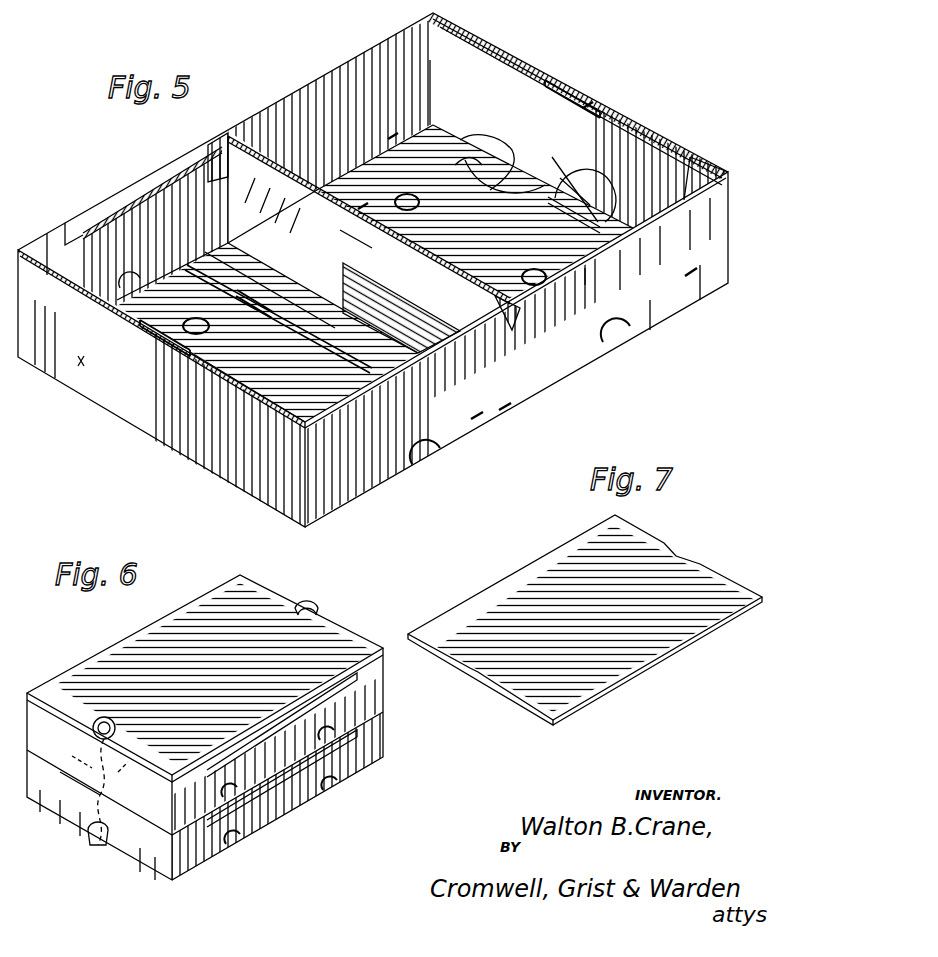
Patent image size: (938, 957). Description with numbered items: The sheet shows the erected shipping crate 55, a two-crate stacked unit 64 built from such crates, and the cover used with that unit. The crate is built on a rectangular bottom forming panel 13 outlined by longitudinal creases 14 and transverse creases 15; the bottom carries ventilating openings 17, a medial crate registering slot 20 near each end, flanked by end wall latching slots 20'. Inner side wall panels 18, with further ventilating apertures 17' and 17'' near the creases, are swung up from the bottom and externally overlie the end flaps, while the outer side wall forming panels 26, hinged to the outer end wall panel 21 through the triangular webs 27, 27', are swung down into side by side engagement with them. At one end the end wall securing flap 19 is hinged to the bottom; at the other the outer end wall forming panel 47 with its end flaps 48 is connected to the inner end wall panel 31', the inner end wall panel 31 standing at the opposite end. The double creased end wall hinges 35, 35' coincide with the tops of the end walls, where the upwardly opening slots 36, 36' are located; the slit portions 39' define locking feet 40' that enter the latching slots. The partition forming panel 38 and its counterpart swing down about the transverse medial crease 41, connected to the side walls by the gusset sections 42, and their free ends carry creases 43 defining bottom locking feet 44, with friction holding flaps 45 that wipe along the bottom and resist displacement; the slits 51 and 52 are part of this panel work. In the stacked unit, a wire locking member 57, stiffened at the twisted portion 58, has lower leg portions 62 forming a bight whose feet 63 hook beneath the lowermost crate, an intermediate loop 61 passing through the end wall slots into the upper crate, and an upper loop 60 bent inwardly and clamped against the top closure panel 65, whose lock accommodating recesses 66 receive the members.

In FIG. 5, the bottom forming panel 13 is at (585, 280).
In FIG. 6, the bottom forming panel 13 is at (328, 736).
In FIG. 5, the longitudinal creases 14 is at (172, 268).
In FIG. 5, the transverse creases 15 is at (600, 238).
In FIG. 5, the ventilating openings 17 is at (440, 218).
In FIG. 5, the ventilating apertures 17' is at (423, 469).
In FIG. 5, the arched opening 17'' is at (544, 377).
In FIG. 5, the inner side wall panels 18 is at (313, 120).
In FIG. 5, the end wall securing flap 19 is at (600, 190).
In FIG. 5, the crate registering slot 20 is at (554, 218).
In FIG. 6, the crate registering slot 20 is at (74, 870).
In FIG. 5, the end wall latching slots 20' is at (471, 212).
In FIG. 5, the outer end wall panel 21 is at (155, 440).
In FIG. 6, the outer end wall panel 21 is at (60, 772).
In FIG. 5, the outer side wall forming panels 26 is at (263, 133).
In FIG. 6, the outer side wall forming panels 26 is at (372, 680).
In FIG. 5, the triangular webs 27 is at (154, 314).
In FIG. 5, the corner flap 27' is at (717, 164).
In FIG. 5, the inner end wall panel 31 is at (168, 355).
In FIG. 6, the inner end wall panel 31 is at (61, 832).
In FIG. 5, the left hand inner end wall panel 31' is at (675, 120).
In FIG. 5, the double creased end wall hinge 35 is at (239, 387).
In FIG. 5, the double creased end wall hinge 35' is at (649, 103).
In FIG. 5, the transversely elongated slot 36 is at (142, 339).
In FIG. 6, the transversely elongated slot 36 is at (84, 702).
In FIG. 5, the transversely elongated slot 36' is at (590, 85).
In FIG. 5, the partition forming panel 38 is at (355, 235).
In FIG. 5, the inverted U-shaped slit portions 39' is at (481, 175).
In FIG. 5, the locking feet 40' is at (493, 153).
In FIG. 5, the transverse medial crease 41 is at (318, 203).
In FIG. 5, the gusset sections 42 is at (206, 145).
In FIG. 5, the transversely extending creases 43 is at (335, 303).
In FIG. 5, the bottom locking feet 44 is at (297, 275).
In FIG. 5, the friction holding flaps 45 is at (312, 323).
In FIG. 5, the outer end wall forming panel 47 is at (577, 168).
In FIG. 5, the end flaps 48 is at (425, 167).
In FIG. 5, the slit 51 is at (560, 172).
In FIG. 5, the slot 52 is at (393, 138).
In FIG. 5, the shipping crate 55 is at (557, 56).
In FIG. 6, the shipping crate 55 is at (403, 703).
In FIG. 6, the locking member 57 is at (285, 612).
In FIG. 6, the twisted or welded portion 58 is at (70, 760).
In FIG. 6, the upper crate aligning and stabilizing loop 60 is at (118, 724).
In FIG. 6, the intermediate crate aligning and stabilizing loop 61 is at (148, 745).
In FIG. 6, the lower leg portions 62 is at (92, 838).
In FIG. 6, the feet 63 is at (130, 858).
In FIG. 6, the two-crate stacked unit 64 is at (170, 592).
In FIG. 6, the top closure panel 65 is at (240, 590).
In FIG. 7, the top closure panel 65 is at (530, 575).
In FIG. 6, the lock accommodating recesses 66 is at (305, 610).
In FIG. 7, the lock accommodating recesses 66 is at (683, 556).